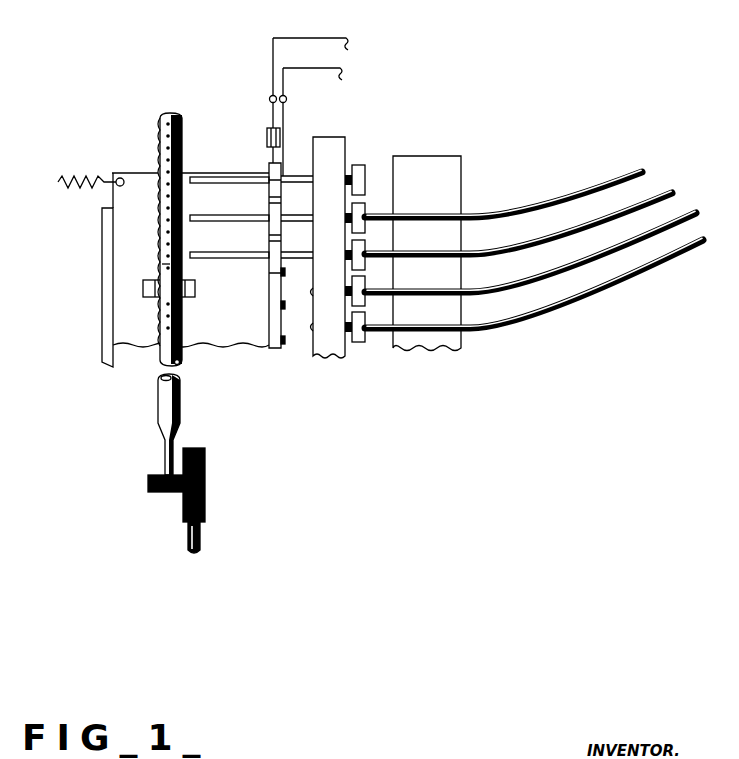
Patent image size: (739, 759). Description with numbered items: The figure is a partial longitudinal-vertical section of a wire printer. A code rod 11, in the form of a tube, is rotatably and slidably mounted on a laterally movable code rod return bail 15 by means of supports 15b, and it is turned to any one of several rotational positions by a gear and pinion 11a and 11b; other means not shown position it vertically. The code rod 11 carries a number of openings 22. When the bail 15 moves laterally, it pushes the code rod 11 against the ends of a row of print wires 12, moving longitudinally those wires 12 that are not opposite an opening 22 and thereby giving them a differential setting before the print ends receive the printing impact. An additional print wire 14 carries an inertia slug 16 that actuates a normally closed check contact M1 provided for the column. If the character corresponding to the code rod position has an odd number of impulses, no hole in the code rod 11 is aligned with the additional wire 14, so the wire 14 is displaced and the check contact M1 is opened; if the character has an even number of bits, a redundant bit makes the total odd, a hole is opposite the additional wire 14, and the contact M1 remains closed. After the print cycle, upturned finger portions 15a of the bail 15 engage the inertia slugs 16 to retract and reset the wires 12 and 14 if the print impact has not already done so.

The code rod return bail 15 is at (141, 175).
The upturned finger portions 15a is at (284, 312).
The supports 15b is at (196, 293).
The additional print wire 14 is at (192, 184).
The print wires 12 is at (192, 222).
The openings 22 is at (164, 265).
The code rod 11 is at (181, 393).
The gear 11a is at (148, 481).
The pinion 11b is at (205, 477).
The check contact M1 is at (271, 148).
The inertia slug 16 is at (362, 167).